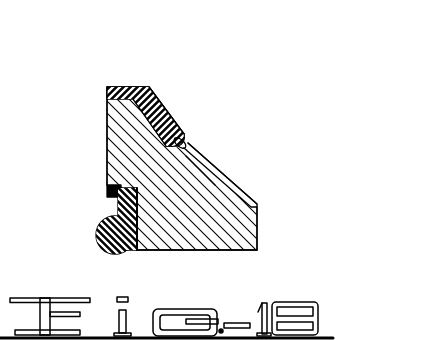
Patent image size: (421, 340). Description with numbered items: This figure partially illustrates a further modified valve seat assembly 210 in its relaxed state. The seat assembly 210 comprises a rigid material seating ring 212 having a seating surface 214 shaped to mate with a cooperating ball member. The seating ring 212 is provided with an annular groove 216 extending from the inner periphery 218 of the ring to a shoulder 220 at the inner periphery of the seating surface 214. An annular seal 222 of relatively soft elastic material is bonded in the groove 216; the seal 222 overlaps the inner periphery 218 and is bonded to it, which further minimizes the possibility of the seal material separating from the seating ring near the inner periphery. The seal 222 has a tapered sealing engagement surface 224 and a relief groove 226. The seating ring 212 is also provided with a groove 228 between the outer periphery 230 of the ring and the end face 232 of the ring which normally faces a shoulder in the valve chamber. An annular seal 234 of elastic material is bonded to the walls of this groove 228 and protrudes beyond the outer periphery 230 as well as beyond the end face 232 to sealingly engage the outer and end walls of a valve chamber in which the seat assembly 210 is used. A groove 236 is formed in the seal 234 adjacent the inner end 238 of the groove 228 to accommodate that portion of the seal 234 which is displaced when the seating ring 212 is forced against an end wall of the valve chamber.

The valve seat assembly 210 is at (212, 155).
The seating ring 212 is at (240, 227).
The seating surface 214 is at (233, 182).
The annular groove 216 is at (147, 124).
The inner periphery 218 is at (110, 94).
The shoulder 220 is at (193, 150).
The annular seal 222 is at (160, 104).
The tapered sealing engagement surface 224 is at (151, 96).
The relief groove 226 is at (187, 138).
The groove 228 is at (140, 221).
The outer periphery 230 is at (163, 252).
The end face 232 is at (107, 152).
The annular seal 234 is at (104, 236).
The groove 236 is at (118, 199).
The inner end 238 is at (112, 180).